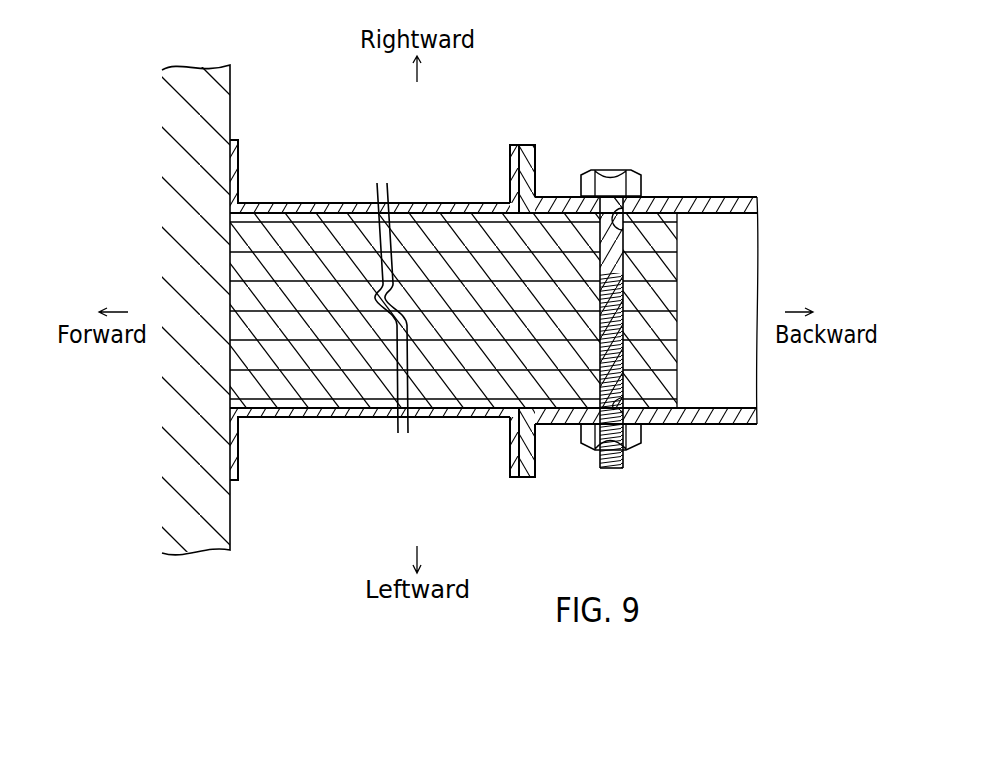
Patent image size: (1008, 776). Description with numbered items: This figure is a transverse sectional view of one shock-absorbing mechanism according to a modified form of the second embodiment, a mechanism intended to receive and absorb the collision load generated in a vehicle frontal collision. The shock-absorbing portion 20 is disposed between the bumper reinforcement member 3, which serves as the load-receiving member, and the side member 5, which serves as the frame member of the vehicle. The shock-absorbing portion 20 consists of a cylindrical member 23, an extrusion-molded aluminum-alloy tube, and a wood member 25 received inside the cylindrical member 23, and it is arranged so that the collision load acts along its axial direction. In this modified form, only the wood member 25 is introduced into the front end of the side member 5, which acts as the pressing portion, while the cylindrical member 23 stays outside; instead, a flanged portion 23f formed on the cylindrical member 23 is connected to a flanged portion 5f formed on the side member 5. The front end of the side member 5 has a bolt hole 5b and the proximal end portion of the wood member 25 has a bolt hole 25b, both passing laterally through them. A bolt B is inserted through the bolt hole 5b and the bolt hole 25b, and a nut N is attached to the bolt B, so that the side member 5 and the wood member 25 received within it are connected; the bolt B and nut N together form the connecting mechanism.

The bumper reinforcement member 3 is at (208, 402).
The shock-absorbing portion 20 is at (332, 185).
The cylindrical member 23 is at (412, 206).
The flanged portion 23f is at (513, 181).
The side member 5 is at (689, 190).
The flanged portion 5f is at (528, 168).
The bolt hole 5b is at (621, 224).
The wood member 25 is at (446, 328).
The bolt hole 25b is at (615, 293).
The bolt B is at (613, 188).
The nut N is at (638, 446).